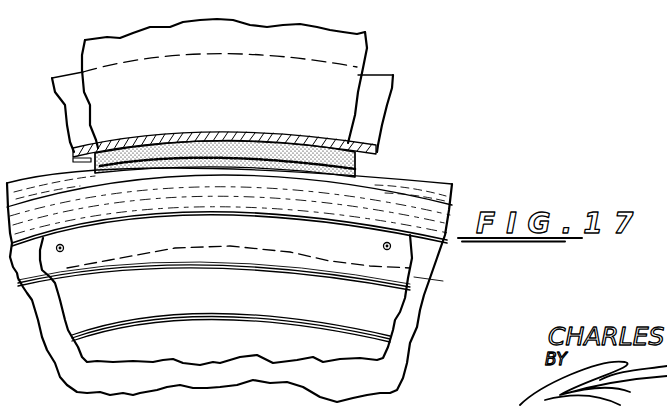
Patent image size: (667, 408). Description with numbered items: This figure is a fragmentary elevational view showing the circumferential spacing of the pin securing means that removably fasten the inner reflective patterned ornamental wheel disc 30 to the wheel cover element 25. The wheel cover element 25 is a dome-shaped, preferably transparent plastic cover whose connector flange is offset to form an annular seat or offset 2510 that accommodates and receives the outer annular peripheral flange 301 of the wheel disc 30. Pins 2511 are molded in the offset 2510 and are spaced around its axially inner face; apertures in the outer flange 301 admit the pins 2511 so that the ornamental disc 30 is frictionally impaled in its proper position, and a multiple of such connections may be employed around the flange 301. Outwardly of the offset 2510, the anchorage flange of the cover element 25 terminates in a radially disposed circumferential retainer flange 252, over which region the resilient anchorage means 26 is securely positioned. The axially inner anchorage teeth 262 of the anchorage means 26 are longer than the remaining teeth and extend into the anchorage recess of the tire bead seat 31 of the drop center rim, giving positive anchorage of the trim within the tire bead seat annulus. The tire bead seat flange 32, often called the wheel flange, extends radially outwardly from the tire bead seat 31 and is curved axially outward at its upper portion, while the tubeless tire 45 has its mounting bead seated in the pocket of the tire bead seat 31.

The wheel cover element 25 is at (400, 370).
The resilient anchorage means 26 is at (262, 133).
The inner reflective patterned ornamental wheel disc 30 is at (383, 315).
The tire bead seat 31 is at (376, 148).
The tire bead seat flange 32 is at (387, 105).
The tire 45 is at (342, 53).
The retainer flange 252 is at (420, 186).
The axially inner anchorage teeth 262 is at (214, 148).
The outer annular peripheral flange 301 is at (243, 237).
The offset 2510 is at (433, 258).
The pin 2511 is at (66, 247).